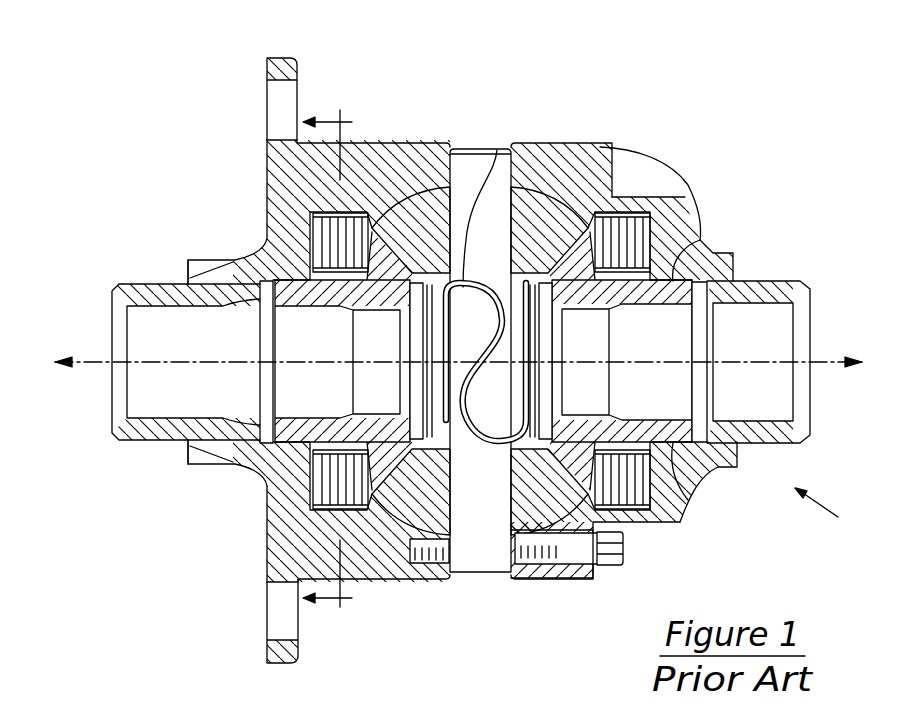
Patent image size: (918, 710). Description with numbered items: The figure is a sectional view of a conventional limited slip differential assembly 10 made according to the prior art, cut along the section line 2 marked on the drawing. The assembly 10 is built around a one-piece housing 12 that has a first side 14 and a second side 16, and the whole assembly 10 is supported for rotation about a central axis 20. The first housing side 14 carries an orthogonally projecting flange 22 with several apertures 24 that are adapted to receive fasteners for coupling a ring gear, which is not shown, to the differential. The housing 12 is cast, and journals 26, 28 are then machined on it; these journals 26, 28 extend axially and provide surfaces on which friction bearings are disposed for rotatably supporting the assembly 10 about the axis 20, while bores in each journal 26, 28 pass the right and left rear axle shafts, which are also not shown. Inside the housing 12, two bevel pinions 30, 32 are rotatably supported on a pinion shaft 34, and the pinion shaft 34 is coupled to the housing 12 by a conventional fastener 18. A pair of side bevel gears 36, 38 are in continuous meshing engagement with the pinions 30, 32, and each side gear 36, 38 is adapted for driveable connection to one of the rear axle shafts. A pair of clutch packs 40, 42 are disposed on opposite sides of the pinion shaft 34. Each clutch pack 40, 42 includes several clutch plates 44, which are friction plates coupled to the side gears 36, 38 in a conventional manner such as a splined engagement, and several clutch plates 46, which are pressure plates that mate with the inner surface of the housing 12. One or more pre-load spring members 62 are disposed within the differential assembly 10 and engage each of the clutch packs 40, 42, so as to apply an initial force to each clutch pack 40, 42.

The differential assembly 10 is at (833, 512).
The housing 12 is at (690, 170).
The first side 14 is at (444, 142).
The second side 16 is at (638, 149).
The fastener 18 is at (602, 565).
The central axis 20 is at (105, 355).
The flange 22 is at (283, 56).
The apertures 24 is at (287, 97).
The journal 26 is at (160, 283).
The journal 28 is at (770, 280).
The bevel pinion 30 is at (440, 185).
The bevel pinion 32 is at (517, 568).
The pinion shaft 34 is at (494, 172).
The side bevel gear 36 is at (262, 238).
The side bevel gear 38 is at (697, 468).
The clutch pack 40 is at (317, 497).
The clutch pack 42 is at (657, 497).
The clutch plates 44 is at (697, 243).
The clutch plates 46 is at (613, 217).
The pre-load spring member 62 is at (533, 188).
The section line 2- 2 is at (341, 358).